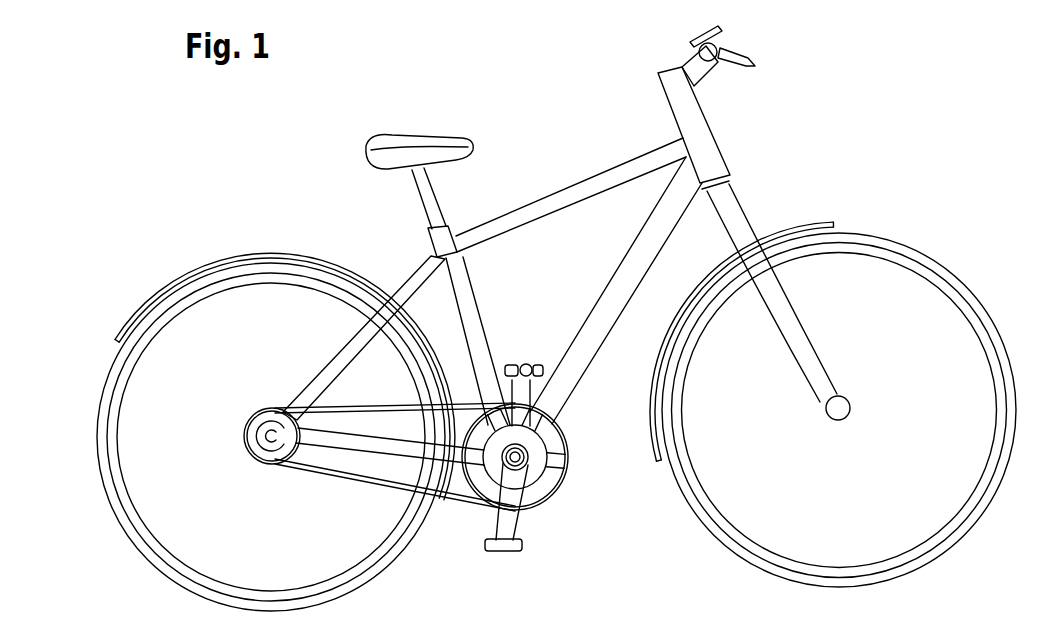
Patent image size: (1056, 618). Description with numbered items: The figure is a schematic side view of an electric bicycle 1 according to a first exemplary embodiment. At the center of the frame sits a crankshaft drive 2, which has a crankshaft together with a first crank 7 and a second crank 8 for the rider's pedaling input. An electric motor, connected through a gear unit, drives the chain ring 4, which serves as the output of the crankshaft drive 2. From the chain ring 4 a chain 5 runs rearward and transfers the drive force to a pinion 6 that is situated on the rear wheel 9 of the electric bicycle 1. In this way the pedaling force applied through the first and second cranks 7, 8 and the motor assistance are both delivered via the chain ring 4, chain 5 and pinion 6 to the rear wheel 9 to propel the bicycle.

The electric bicycle 1 is at (228, 160).
The crankshaft drive 2 is at (572, 492).
The chain ring 4 is at (539, 506).
The chain 5 is at (348, 478).
The pinion 6 is at (254, 437).
The first crank 7 is at (519, 361).
The second crank 8 is at (497, 553).
The rear wheel 9 is at (120, 354).